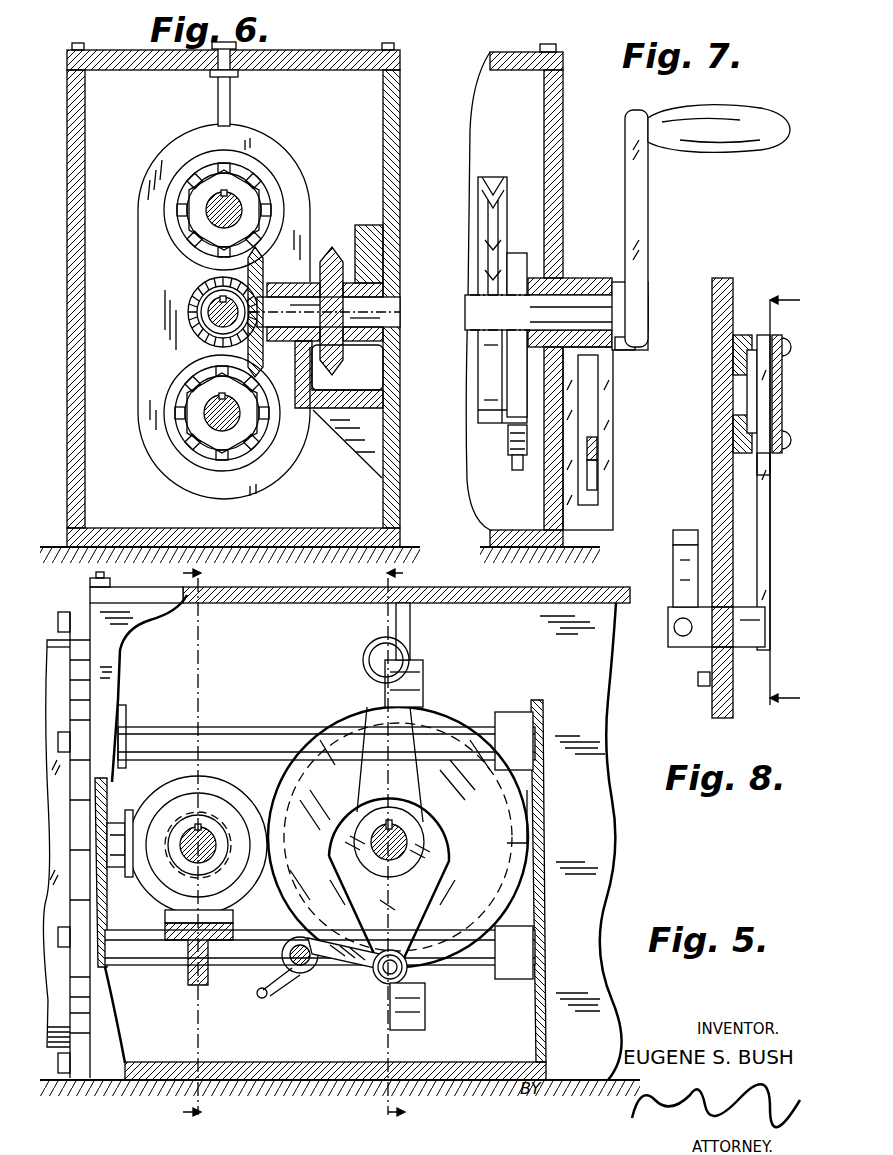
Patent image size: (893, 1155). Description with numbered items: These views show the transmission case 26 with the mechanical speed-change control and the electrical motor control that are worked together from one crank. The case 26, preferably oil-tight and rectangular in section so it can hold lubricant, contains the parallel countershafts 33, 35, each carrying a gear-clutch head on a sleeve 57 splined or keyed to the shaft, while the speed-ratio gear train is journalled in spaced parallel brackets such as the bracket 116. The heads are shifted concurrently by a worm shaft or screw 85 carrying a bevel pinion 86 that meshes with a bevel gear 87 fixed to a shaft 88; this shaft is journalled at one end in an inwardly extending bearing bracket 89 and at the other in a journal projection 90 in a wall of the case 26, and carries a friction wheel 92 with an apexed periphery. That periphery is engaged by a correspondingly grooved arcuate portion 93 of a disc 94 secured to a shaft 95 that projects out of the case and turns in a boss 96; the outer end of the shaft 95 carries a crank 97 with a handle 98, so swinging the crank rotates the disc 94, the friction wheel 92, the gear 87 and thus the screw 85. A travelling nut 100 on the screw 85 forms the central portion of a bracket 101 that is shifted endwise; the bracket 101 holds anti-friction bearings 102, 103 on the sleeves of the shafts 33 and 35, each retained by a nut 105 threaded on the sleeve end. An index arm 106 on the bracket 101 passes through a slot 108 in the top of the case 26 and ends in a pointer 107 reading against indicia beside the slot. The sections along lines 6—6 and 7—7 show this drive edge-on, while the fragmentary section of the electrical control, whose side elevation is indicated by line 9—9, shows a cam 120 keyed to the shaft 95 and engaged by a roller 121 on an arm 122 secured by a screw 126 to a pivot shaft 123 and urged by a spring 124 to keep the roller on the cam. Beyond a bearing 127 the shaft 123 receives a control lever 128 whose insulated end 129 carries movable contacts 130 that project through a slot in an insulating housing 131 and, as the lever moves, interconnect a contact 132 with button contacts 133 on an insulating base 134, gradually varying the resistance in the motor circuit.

In FIG. 5, the section line 6— 6 is at (205, 844).
In FIG. 5, the section line 7— 7 is at (391, 844).
In FIG. 8, the section line 9— 9 is at (787, 499).
In FIG. 6, the case 26 is at (78, 520).
In FIG. 7, the case 26 is at (560, 170).
In FIG. 8, the case 26 is at (712, 484).
In FIG. 5, the case 26 is at (293, 1078).
In FIG. 6, the transmission shaft 33 is at (208, 422).
In FIG. 5, the transmission shaft 33 is at (132, 950).
In FIG. 6, the transmission shaft 35 is at (236, 214).
In FIG. 5, the transmission shaft 35 is at (228, 738).
In FIG. 5, the sleeve 57 is at (508, 736).
In FIG. 6, the worm shaft or screw 85 is at (214, 330).
In FIG. 6, the bevel pinion 86 is at (190, 313).
In FIG. 5, the bevel pinion 86 is at (133, 813).
In FIG. 6, the bevel gear 87 is at (265, 270).
In FIG. 6, the shaft 88 is at (385, 314).
In FIG. 5, the shaft 88 is at (190, 858).
In FIG. 6, the bearing bracket 89 is at (310, 278).
In FIG. 5, the bearing bracket 89 is at (196, 980).
In FIG. 6, the journal projection 90 is at (345, 262).
In FIG. 6, the friction wheel 92 is at (338, 258).
In FIG. 5, the friction wheel 92 is at (216, 812).
In FIG. 7, the grooved arcuate portion 93 is at (488, 180).
In FIG. 5, the grooved arcuate portion 93 is at (322, 725).
In FIG. 7, the disc 94 is at (490, 360).
In FIG. 5, the disc 94 is at (483, 878).
In FIG. 7, the shaft 95 is at (566, 300).
In FIG. 5, the shaft 95 is at (406, 847).
In FIG. 7, the boss 96 is at (598, 286).
In FIG. 7, the crank 97 is at (649, 206).
In FIG. 7, the handle 98 is at (750, 126).
In FIG. 6, the travelling nut 100 is at (178, 274).
In FIG. 6, the bracket 101 is at (183, 152).
In FIG. 5, the bracket 101 is at (424, 678).
In FIG. 6, the anti-friction bearing 102 is at (178, 392).
In FIG. 6, the anti-friction bearing 103 is at (190, 184).
In FIG. 6, the nut 105 is at (206, 202).
In FIG. 6, the index arm 106 is at (230, 106).
In FIG. 5, the index arm 106 is at (411, 626).
In FIG. 6, the pointer 107 is at (236, 47).
In FIG. 6, the slot 108 is at (240, 73).
In FIG. 5, the bracket 116 is at (535, 1036).
In FIG. 7, the cam 120 is at (510, 404).
In FIG. 5, the cam 120 is at (402, 926).
In FIG. 7, the roller 121 is at (516, 470).
In FIG. 8, the roller 121 is at (690, 528).
In FIG. 5, the roller 121 is at (408, 978).
In FIG. 7, the arm 122 is at (508, 448).
In FIG. 8, the arm 122 is at (676, 598).
In FIG. 5, the arm 122 is at (372, 985).
In FIG. 5, the shaft 123 is at (302, 975).
In FIG. 8, the spring 124 is at (678, 616).
In FIG. 5, the spring 124 is at (265, 990).
In FIG. 8, the screw 126 is at (682, 650).
In FIG. 5, the screw 126 is at (305, 937).
In FIG. 8, the bearing 127 is at (765, 618).
In FIG. 7, the control lever 128 is at (598, 476).
In FIG. 8, the control lever 128 is at (766, 569).
In FIG. 8, the insulated end 129 is at (770, 458).
In FIG. 8, the movable contacts 130 is at (760, 380).
In FIG. 7, the insulating housing 131 is at (584, 410).
In FIG. 8, the insulating housing 131 is at (745, 330).
In FIG. 8, the contact 132 is at (742, 436).
In FIG. 8, the button contacts 133 is at (745, 386).
In FIG. 8, the insulating base 134 is at (742, 368).